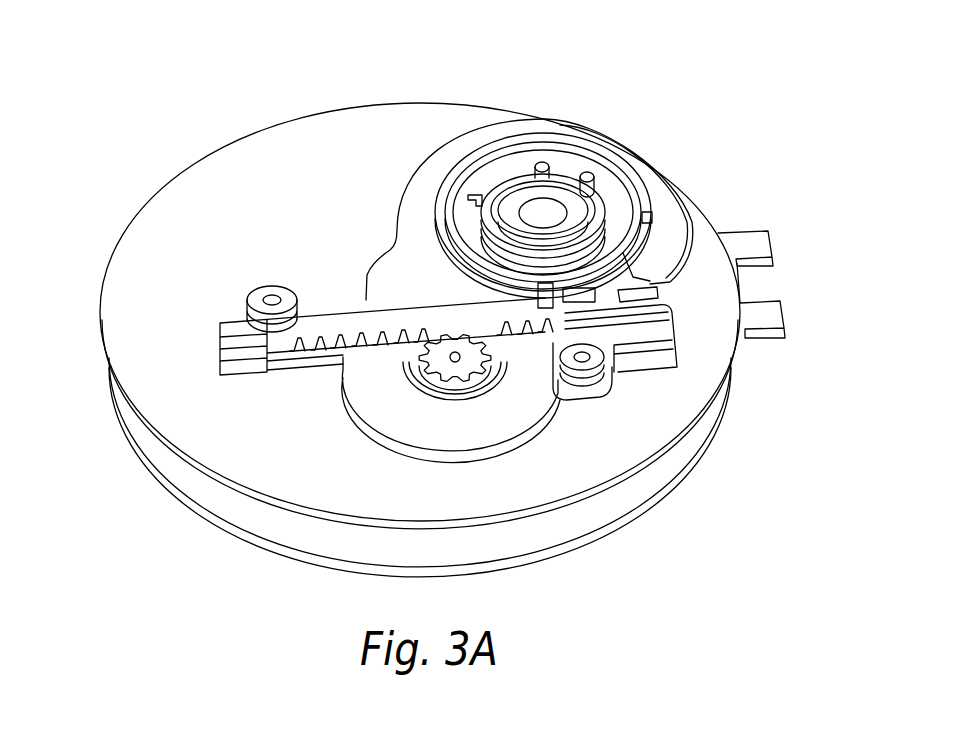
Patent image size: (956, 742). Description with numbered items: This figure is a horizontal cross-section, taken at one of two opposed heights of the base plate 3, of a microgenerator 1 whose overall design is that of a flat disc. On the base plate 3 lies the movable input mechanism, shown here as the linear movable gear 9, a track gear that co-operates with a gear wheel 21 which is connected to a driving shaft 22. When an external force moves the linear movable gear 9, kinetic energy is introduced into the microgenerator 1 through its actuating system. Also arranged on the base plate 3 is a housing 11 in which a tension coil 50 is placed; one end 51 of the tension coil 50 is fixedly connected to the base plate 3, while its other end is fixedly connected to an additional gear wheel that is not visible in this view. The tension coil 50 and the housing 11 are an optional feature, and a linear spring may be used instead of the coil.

The microgenerator 1 is at (170, 88).
The base plate 3 is at (157, 248).
The linear movable gear 9 is at (342, 322).
The housing 11 is at (670, 207).
The gear wheel 21 is at (403, 358).
The driving shaft 22 is at (455, 356).
The tension coil 50 is at (524, 176).
The end of tension coil 51 is at (476, 203).